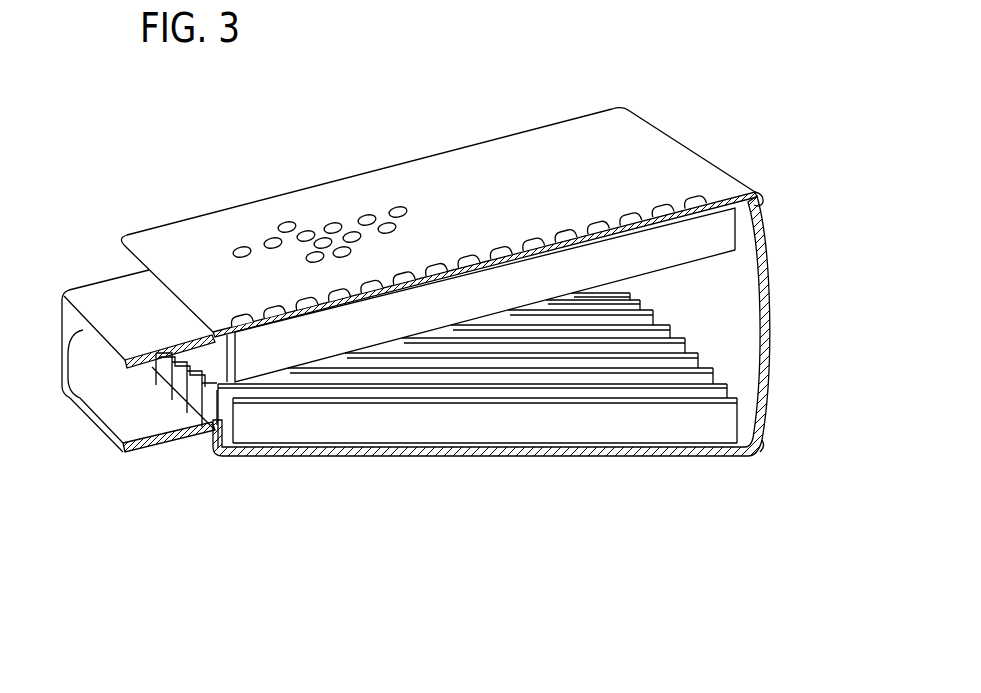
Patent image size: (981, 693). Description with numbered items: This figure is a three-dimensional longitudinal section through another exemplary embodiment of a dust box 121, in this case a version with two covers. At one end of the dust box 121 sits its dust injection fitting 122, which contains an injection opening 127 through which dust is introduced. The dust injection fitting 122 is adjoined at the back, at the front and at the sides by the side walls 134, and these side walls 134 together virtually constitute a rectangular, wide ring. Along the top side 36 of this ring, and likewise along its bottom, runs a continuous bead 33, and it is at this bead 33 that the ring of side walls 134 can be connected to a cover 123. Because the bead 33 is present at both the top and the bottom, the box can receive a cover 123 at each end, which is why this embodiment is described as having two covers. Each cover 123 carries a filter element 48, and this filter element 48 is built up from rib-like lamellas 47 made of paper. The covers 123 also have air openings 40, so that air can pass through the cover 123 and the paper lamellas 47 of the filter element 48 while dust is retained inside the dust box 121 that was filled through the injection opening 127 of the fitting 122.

The dust box 121 is at (120, 208).
The dust injection fitting 122 is at (97, 298).
The injection opening 127 is at (105, 373).
The cover 123 is at (658, 161).
The continuous bead 33 is at (757, 191).
The side walls 134 is at (765, 255).
The top side 36 is at (492, 175).
The air openings 40 is at (243, 246).
The filter element 48 is at (674, 328).
The rib-like lamellas 47 is at (360, 378).